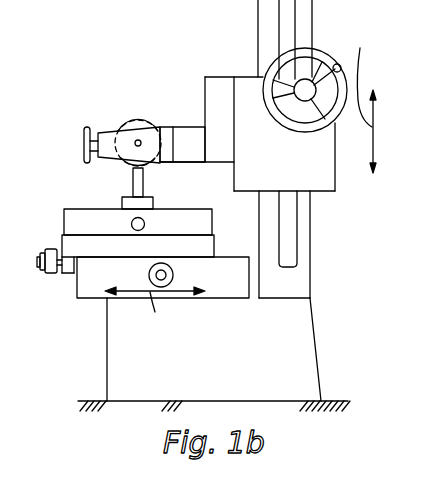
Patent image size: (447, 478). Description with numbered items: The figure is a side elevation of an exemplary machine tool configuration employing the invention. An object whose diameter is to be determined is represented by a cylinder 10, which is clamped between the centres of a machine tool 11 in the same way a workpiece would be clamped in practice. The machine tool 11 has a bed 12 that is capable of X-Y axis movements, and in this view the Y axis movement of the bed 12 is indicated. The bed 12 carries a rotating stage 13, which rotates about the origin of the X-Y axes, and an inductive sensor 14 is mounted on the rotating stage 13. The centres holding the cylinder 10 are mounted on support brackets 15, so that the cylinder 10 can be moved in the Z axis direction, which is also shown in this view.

The cylinder 10 is at (137, 120).
The machine tool 11 is at (317, 257).
The bed 12 is at (94, 287).
The rotating stage 13 is at (72, 217).
The inductive sensor 14 is at (143, 182).
The support brackets 15 is at (130, 135).